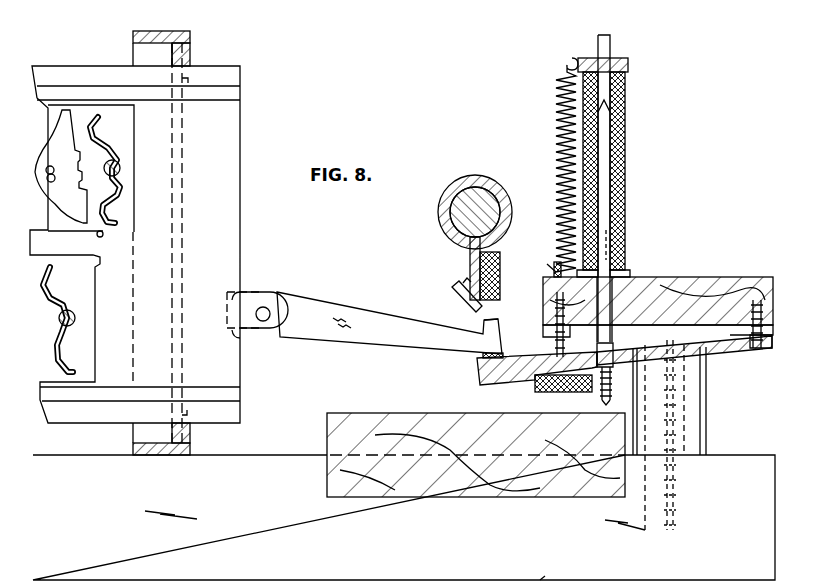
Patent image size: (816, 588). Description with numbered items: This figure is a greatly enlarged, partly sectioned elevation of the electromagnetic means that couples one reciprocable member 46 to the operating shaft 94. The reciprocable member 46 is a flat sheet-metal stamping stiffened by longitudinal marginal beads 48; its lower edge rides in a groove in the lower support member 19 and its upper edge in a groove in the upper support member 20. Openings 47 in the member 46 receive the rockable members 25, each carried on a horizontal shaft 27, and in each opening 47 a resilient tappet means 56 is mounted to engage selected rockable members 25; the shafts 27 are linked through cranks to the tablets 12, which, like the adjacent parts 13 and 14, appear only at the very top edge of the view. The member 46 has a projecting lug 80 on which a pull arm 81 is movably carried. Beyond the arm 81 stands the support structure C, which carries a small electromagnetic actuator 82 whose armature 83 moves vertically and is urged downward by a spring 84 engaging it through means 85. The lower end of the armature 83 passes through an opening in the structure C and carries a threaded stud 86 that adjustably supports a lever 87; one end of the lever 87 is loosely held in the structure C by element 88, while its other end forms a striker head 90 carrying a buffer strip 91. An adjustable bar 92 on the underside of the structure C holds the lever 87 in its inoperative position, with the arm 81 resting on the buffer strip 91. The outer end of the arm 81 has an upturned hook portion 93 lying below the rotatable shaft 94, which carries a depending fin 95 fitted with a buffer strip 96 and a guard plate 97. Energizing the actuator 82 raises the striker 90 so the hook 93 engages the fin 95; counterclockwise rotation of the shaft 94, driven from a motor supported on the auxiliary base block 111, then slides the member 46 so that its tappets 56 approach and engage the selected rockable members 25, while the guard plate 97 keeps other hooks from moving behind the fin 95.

The tablet 12 is at (305, 2).
The section line 13 is at (554, 5).
The section line 14 is at (382, 5).
The lower support member 19 is at (141, 455).
The upper support member 20 is at (160, 22).
The rockable member 25 is at (125, 144).
The shaft 27 is at (121, 170).
The reciprocable member 46 is at (233, 131).
The opening 47 is at (101, 236).
The marginal bead 48 is at (233, 95).
The tappet means 56 is at (58, 128).
The projecting lug 80 is at (260, 288).
The pull arm 81 is at (352, 318).
The electromagnetic actuator 82 is at (624, 155).
The armature 83 is at (606, 238).
The spring 84 is at (560, 168).
The spring engaging means 85 is at (614, 44).
The threaded stud 86 is at (602, 397).
The lever 87 is at (640, 357).
The supporting element 88 is at (748, 358).
The striker head 90 is at (478, 375).
The buffer strip 91 is at (500, 352).
The adjustable bar 92 is at (540, 390).
The hook portion 93 is at (501, 328).
The rotatable shaft 94 is at (473, 200).
The fin member 95 is at (470, 256).
The buffer strip 96 is at (499, 274).
The guard plate 97 is at (461, 301).
The auxiliary base block 111 is at (363, 417).
The support structure C is at (711, 270).